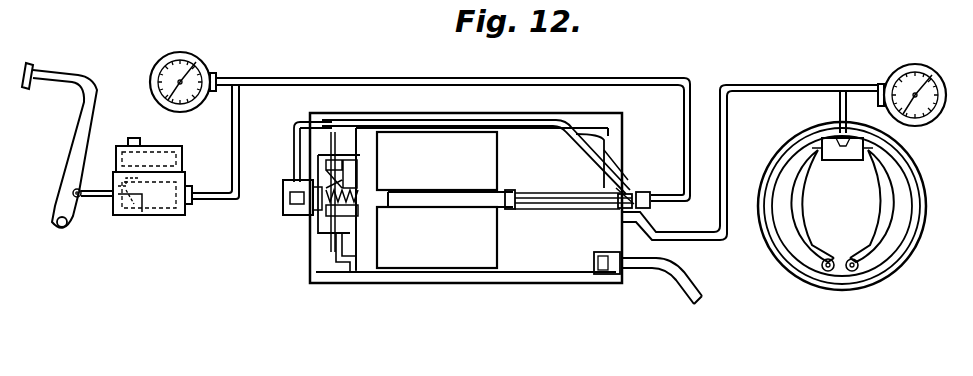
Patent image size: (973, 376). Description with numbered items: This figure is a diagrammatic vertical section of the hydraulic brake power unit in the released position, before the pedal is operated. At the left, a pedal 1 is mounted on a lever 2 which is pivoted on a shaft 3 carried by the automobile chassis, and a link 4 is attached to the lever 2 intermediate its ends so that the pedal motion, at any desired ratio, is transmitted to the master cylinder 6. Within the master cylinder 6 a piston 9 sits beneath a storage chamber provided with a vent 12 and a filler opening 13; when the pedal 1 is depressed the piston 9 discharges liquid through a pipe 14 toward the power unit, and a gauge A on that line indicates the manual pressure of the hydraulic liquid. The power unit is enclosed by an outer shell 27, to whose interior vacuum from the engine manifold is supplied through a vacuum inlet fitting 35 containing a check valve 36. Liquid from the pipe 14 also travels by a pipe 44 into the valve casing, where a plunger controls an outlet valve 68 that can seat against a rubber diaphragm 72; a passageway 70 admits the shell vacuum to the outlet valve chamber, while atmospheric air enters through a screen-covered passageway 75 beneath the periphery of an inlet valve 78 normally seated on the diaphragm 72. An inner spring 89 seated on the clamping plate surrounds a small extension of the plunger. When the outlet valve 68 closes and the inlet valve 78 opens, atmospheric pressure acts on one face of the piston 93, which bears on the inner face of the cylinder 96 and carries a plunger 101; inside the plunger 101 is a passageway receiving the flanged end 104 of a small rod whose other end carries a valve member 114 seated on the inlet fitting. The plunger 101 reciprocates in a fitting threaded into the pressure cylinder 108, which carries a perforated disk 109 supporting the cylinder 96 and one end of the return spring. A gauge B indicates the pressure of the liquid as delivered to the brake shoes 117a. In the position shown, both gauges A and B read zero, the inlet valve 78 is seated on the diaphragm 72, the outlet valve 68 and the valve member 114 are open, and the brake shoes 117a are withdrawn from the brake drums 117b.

The pedal 1 is at (33, 68).
The lever 2 is at (54, 80).
The shaft 3 is at (63, 228).
The link 4 is at (98, 198).
The master cylinder 6 is at (163, 208).
The piston 9 is at (130, 222).
The vent 12 is at (166, 149).
The filler opening 13 is at (133, 140).
The pipe 14 is at (216, 205).
The gauge A is at (187, 63).
The gauge B is at (914, 64).
The outer shell 27 is at (588, 120).
The vacuum inlet fitting 35 is at (605, 255).
The check valve 36 is at (598, 282).
The pipe 44 is at (604, 176).
The outlet valve 68 is at (320, 166).
The passageway 70 is at (318, 134).
The diaphragm 72 is at (343, 146).
The passageway 75 is at (345, 262).
The inlet valve 78 is at (345, 163).
The inner spring 89 is at (356, 196).
The piston 93 is at (378, 240).
The cylinder 96 is at (462, 124).
The plunger 101 is at (438, 190).
The flanged end 104 is at (506, 210).
The pressure cylinder 108 is at (549, 191).
The disk 109 is at (498, 162).
The valve member 114 is at (610, 213).
The brake shoes 117a is at (910, 194).
The brake drums 117b is at (919, 180).